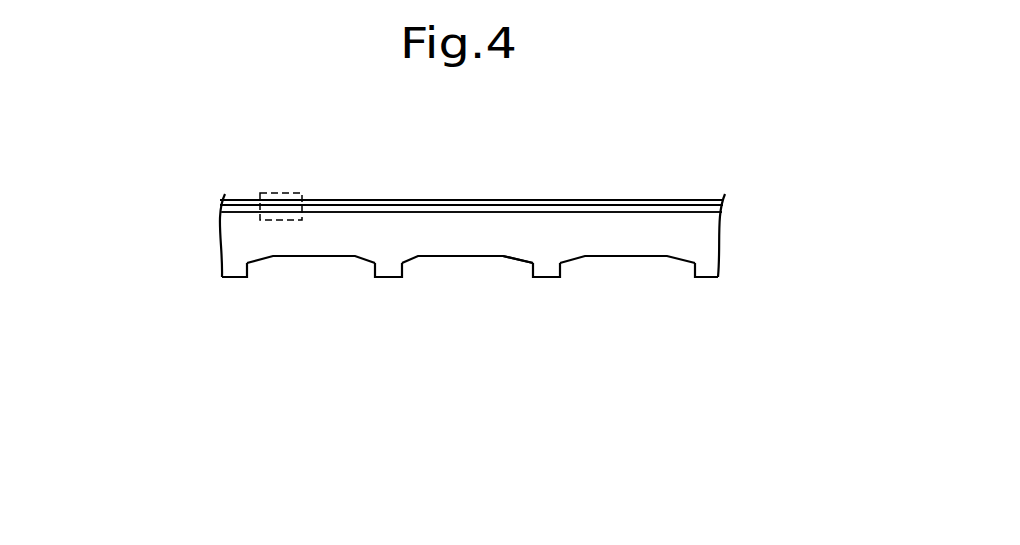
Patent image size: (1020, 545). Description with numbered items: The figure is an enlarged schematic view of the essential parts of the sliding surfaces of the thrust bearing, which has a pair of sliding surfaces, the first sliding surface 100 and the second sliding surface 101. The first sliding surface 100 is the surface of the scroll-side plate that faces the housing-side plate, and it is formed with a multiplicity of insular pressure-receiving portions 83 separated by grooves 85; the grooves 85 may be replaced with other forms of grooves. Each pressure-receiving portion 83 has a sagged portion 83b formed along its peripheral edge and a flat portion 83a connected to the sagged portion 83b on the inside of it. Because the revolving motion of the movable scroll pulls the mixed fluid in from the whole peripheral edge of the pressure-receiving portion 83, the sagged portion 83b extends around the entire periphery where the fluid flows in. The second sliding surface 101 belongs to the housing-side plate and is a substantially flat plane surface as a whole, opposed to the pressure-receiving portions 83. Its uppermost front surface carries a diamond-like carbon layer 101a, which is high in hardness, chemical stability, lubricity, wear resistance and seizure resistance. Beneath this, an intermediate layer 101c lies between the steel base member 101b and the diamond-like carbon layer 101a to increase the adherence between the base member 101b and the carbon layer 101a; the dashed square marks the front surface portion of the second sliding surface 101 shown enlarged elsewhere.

The first sliding surface 100 is at (253, 250).
The second sliding surface 101 is at (683, 217).
The diamond-like carbon layer 101a is at (325, 213).
The base member 101b is at (403, 200).
The intermediate layer 101c is at (360, 208).
The pressure-receiving portion 83 is at (305, 258).
The flat portion 83a is at (485, 256).
The sagged portion 83b is at (525, 262).
The groove 85 is at (232, 282).